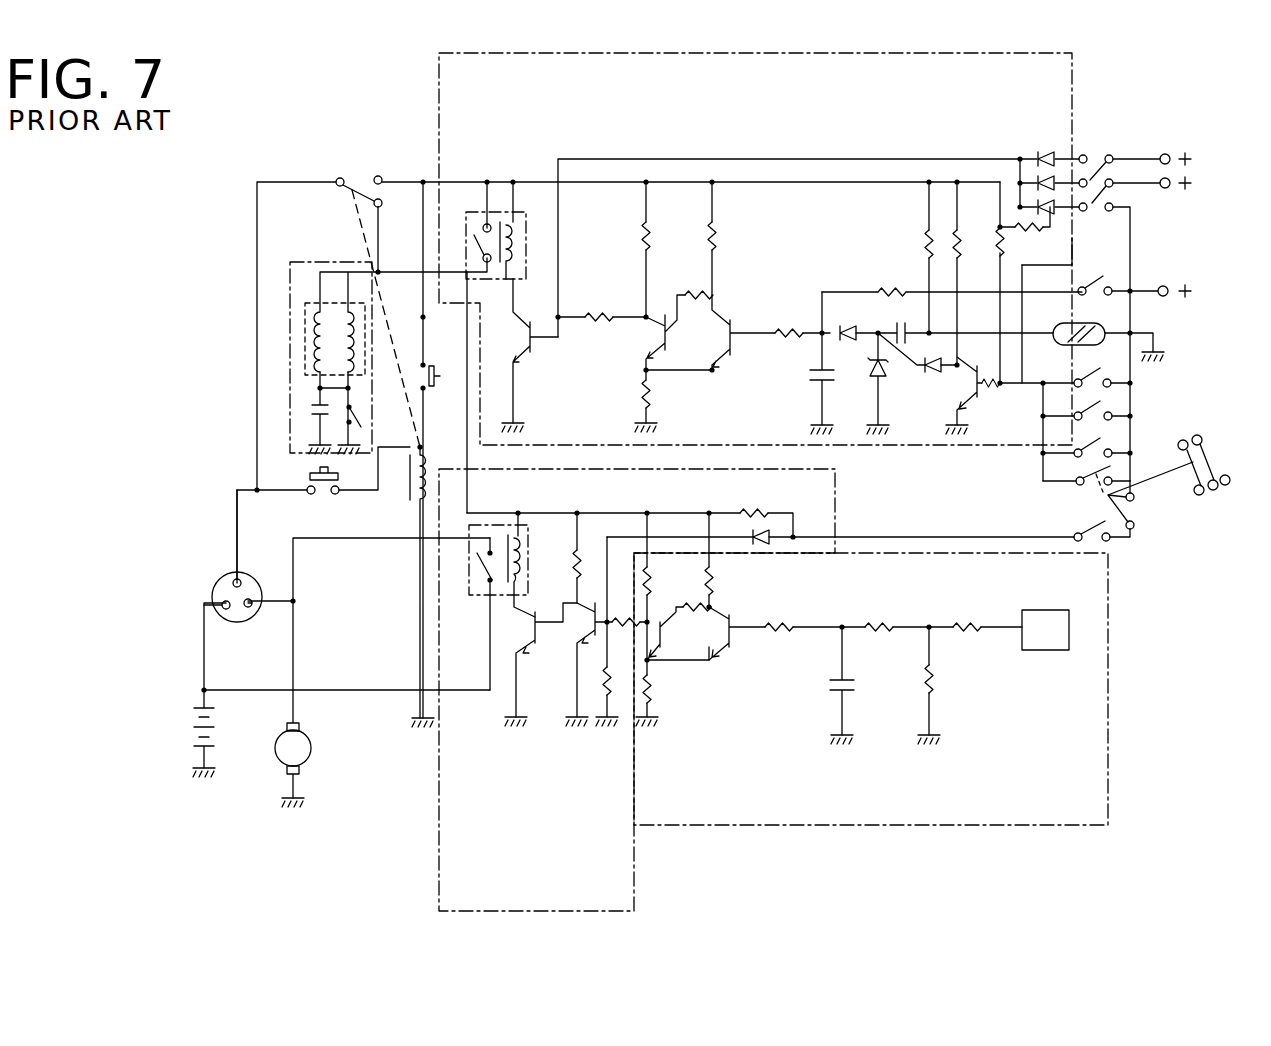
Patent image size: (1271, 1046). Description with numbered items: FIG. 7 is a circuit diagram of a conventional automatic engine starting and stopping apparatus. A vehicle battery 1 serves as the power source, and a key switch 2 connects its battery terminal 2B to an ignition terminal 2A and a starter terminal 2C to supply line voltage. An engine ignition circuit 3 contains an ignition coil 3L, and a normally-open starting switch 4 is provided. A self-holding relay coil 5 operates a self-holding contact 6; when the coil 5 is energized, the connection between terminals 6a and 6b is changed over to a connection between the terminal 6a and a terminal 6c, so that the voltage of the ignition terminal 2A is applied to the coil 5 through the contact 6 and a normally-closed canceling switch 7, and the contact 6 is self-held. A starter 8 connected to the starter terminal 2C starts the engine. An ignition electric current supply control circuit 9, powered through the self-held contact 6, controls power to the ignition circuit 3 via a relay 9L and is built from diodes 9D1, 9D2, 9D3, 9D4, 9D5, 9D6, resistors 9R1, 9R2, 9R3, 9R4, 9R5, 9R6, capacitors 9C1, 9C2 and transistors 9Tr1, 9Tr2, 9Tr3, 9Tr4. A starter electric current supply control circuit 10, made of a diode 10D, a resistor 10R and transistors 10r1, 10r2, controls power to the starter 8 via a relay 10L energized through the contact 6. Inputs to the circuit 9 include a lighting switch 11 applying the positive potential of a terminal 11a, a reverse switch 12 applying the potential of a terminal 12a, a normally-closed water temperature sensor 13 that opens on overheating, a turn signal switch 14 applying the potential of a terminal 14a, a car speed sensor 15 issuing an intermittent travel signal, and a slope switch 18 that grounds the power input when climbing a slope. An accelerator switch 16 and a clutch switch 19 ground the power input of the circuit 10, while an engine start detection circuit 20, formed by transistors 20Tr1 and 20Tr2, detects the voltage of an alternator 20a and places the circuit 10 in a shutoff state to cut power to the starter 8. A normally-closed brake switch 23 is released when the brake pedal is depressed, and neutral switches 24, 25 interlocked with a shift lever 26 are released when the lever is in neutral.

The battery 1 is at (222, 720).
The key switch 2 is at (219, 578).
The ignition terminal 2A is at (240, 580).
The battery terminal 2B is at (215, 592).
The starter terminal 2C is at (242, 625).
The engine ignition circuit 3 is at (312, 262).
The ignition coil 3L is at (305, 317).
The starting switch 4 is at (308, 473).
The self-holding relay coil 5 is at (408, 482).
The self-holding contact 6 is at (338, 178).
The terminal 6a is at (336, 188).
The terminal 6b is at (381, 208).
The terminal 6c is at (378, 176).
The canceling switch 7 is at (432, 366).
The starter 8 is at (313, 744).
The ignition electric current supply control circuit 9 is at (438, 108).
The relay 9L is at (522, 215).
The transistor 9Tr1 is at (967, 407).
The transistor 9Tr2 is at (722, 316).
The transistor 9Tr3 is at (660, 341).
The transistor 9Tr4 is at (523, 354).
The resistor 9R1 is at (1024, 227).
The resistor 9R2 is at (997, 236).
The resistor 9R3 is at (954, 227).
The resistor 9R4 is at (927, 228).
The resistor 9R5 is at (884, 286).
The resistor 9R6 is at (786, 325).
The diode 9D1 is at (1045, 152).
The diode 9D2 is at (1057, 179).
The diode 9D3 is at (1058, 213).
The diode 9D4 is at (937, 368).
The diode 9D5 is at (874, 379).
The diode 9D6 is at (845, 324).
The capacitor 9C1 is at (902, 324).
The capacitor 9C2 is at (816, 380).
The starter electric current supply control circuit 10 is at (835, 500).
The relay 10L is at (522, 531).
The resistor 10R is at (742, 513).
The diode 10D is at (762, 544).
The transistor 10r1 is at (582, 622).
The transistor 10r2 is at (515, 621).
The lighting switch 11 is at (1089, 156).
The terminal 11a is at (1167, 154).
The reverse switch 12 is at (1113, 161).
The terminal 12a is at (1168, 188).
The water temperature sensor 13 is at (1112, 212).
The turn signal switch 14 is at (1113, 286).
The terminal 14a is at (1168, 297).
The car speed sensor 15 is at (1068, 323).
The accelerator switch 16 is at (1074, 374).
The slope switch 18 is at (1113, 450).
The clutch switch 19 is at (1105, 546).
The engine start detection circuit 20 is at (1108, 675).
The alternator 20a is at (1045, 650).
The transistor 20Tr1 is at (721, 639).
The transistor 20Tr2 is at (663, 655).
The brake switch 23 is at (1112, 412).
The neutral switch 24 is at (1133, 506).
The neutral switch 25 is at (1080, 490).
The shift lever 26 is at (1219, 461).